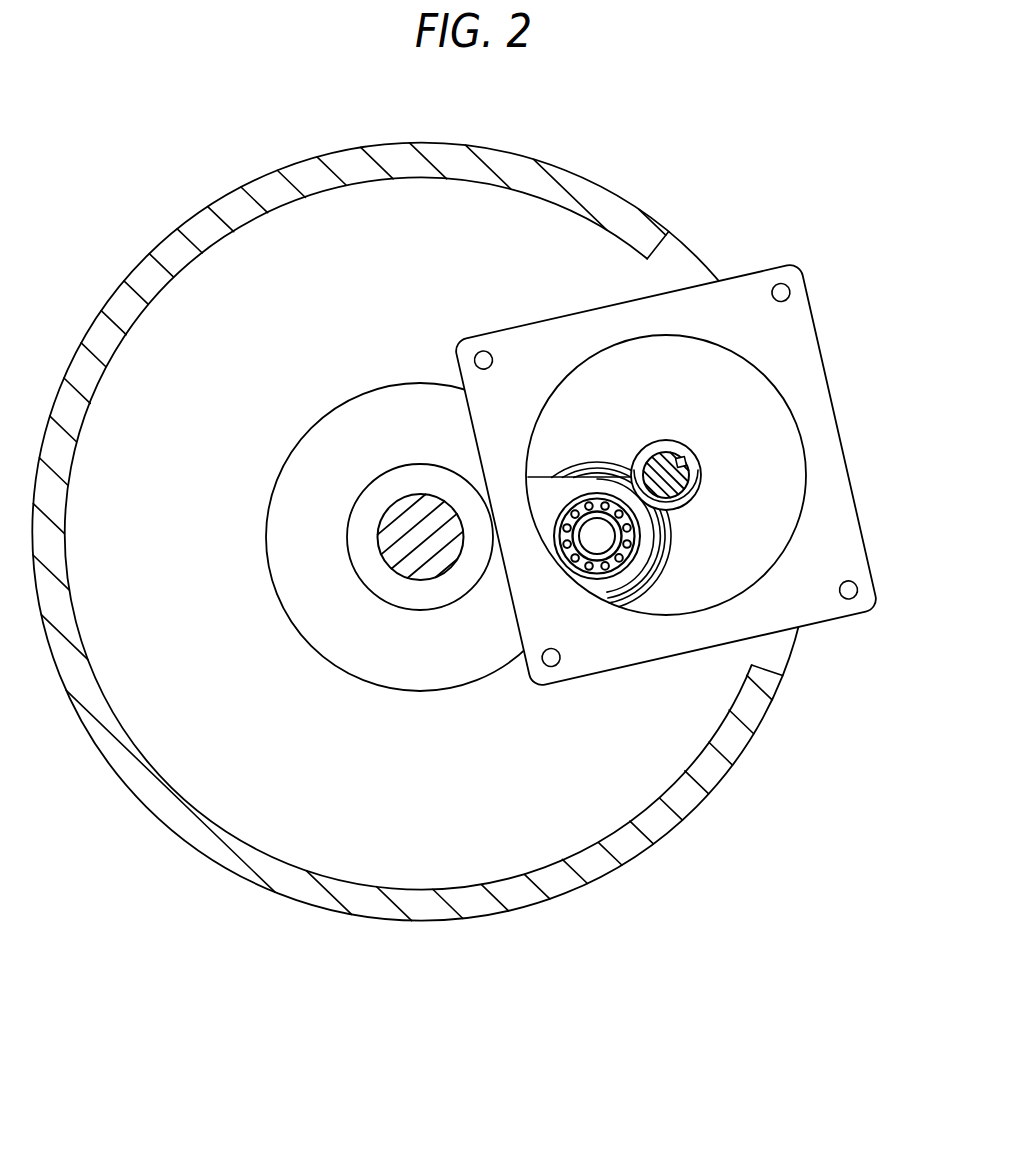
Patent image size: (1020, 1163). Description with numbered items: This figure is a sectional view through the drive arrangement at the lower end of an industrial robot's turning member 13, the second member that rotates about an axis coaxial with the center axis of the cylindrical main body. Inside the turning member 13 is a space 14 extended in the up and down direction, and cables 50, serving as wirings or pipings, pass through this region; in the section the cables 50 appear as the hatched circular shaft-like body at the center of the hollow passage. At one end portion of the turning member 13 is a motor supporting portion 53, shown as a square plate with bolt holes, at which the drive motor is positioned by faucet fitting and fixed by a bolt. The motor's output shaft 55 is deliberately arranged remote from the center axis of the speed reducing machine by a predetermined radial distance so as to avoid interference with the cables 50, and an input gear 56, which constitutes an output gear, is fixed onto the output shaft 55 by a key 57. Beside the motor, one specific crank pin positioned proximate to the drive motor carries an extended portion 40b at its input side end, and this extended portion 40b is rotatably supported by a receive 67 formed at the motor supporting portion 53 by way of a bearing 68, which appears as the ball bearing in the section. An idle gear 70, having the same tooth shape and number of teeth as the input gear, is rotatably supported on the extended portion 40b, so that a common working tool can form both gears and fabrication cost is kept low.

The turning member 13 is at (423, 921).
The space 14 is at (181, 283).
The cables 50 is at (382, 536).
The motor supporting portion 53 is at (832, 440).
The output shaft 55 is at (671, 455).
The input gear 56 is at (702, 475).
The key 57 is at (689, 457).
The extended portion 40b is at (593, 521).
The receive 67 is at (648, 523).
The bearing 68 is at (617, 571).
The idle gear 70 is at (672, 552).